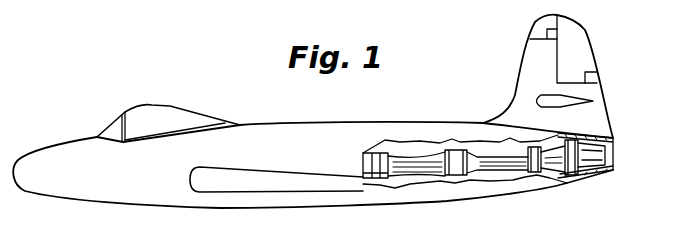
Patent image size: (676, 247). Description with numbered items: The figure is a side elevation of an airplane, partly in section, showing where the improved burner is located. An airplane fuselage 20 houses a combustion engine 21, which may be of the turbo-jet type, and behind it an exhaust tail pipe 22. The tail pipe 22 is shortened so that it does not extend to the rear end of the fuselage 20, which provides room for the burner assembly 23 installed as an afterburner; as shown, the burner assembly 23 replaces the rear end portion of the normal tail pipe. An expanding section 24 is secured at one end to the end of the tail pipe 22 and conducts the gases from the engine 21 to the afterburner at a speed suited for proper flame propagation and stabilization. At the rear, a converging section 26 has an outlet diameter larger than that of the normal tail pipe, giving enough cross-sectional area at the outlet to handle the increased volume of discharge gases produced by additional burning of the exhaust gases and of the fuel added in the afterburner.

The airplane fuselage 20 is at (336, 121).
The combustion engine 21 is at (412, 160).
The exhaust tail pipe 22 is at (497, 167).
The burner assembly 23 is at (569, 183).
The expanding section 24 is at (557, 135).
The converging section 26 is at (616, 154).